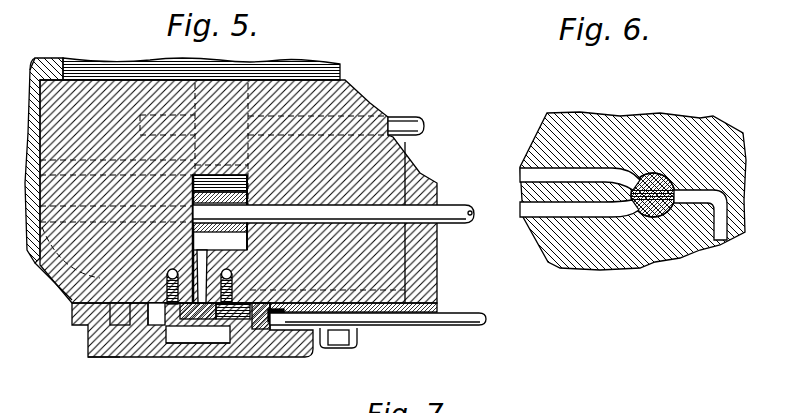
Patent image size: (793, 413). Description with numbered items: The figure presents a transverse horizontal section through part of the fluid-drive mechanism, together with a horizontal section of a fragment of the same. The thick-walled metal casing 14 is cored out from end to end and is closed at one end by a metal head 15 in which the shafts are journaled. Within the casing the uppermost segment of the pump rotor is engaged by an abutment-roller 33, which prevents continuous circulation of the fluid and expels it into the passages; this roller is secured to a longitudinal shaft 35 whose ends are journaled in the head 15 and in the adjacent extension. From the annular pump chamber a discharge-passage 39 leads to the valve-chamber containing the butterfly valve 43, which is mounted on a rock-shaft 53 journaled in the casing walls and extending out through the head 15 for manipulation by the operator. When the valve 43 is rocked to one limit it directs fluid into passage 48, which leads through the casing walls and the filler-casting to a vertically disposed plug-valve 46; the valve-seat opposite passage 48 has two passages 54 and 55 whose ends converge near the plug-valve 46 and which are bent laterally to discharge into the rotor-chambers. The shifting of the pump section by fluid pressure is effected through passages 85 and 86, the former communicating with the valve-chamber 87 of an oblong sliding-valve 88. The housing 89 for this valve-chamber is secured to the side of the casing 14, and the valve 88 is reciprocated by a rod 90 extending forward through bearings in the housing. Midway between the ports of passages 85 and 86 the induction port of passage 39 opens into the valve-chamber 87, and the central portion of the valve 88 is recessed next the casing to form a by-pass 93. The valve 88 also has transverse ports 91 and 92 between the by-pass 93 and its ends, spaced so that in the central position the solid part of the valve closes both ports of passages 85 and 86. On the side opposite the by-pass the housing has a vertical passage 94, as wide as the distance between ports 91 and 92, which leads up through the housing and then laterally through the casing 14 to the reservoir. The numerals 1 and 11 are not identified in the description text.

In FIG. 5, the housing body 1 is at (144, 265).
In FIG. 5, the insert member 11 is at (220, 239).
In FIG. 5, the metal casing 14 is at (392, 262).
In FIG. 5, the metal head 15 is at (437, 288).
In FIG. 5, the abutment-roller 33 is at (292, 60).
In FIG. 5, the longitudinal shaft 35 is at (424, 124).
In FIG. 5, the discharge-passage 39 is at (214, 332).
In FIG. 5, the butterfly valve 43 is at (250, 228).
In FIG. 6, the plug-valve 46 is at (657, 217).
In FIG. 6, the passage 48 is at (720, 241).
In FIG. 5, the rock-shaft 53 is at (455, 205).
In FIG. 6, the passage 54 is at (520, 174).
In FIG. 6, the passage 55 is at (527, 208).
In FIG. 5, the passage 85 is at (66, 281).
In FIG. 5, the passage 86 is at (88, 327).
In FIG. 5, the valve-chamber 87 is at (306, 358).
In FIG. 5, the sliding-valve 88 is at (197, 330).
In FIG. 5, the housing 89 is at (90, 358).
In FIG. 5, the rod 90 is at (422, 326).
In FIG. 5, the transverse port 91 is at (157, 327).
In FIG. 5, the transverse port 92 is at (260, 354).
In FIG. 5, the by-pass 93 is at (208, 319).
In FIG. 5, the vertical passage 94 is at (205, 358).